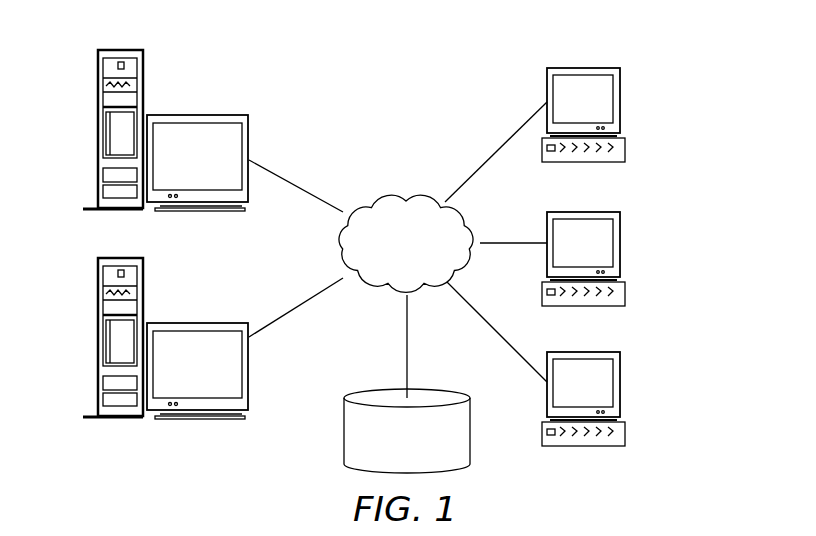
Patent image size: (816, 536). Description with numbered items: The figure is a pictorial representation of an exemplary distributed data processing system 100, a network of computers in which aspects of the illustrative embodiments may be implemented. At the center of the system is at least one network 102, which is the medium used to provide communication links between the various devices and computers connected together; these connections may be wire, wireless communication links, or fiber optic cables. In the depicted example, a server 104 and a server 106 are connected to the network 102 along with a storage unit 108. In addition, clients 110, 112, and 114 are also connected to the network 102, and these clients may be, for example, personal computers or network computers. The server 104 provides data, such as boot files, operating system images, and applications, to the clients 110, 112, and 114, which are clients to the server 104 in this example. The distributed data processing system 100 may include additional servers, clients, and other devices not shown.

The distributed data processing system 100 is at (456, 63).
The network 102 is at (378, 195).
The server 104 is at (99, 130).
The server 106 is at (99, 338).
The storage unit 108 is at (342, 432).
The client 110 is at (620, 102).
The client 112 is at (620, 243).
The client 114 is at (620, 382).